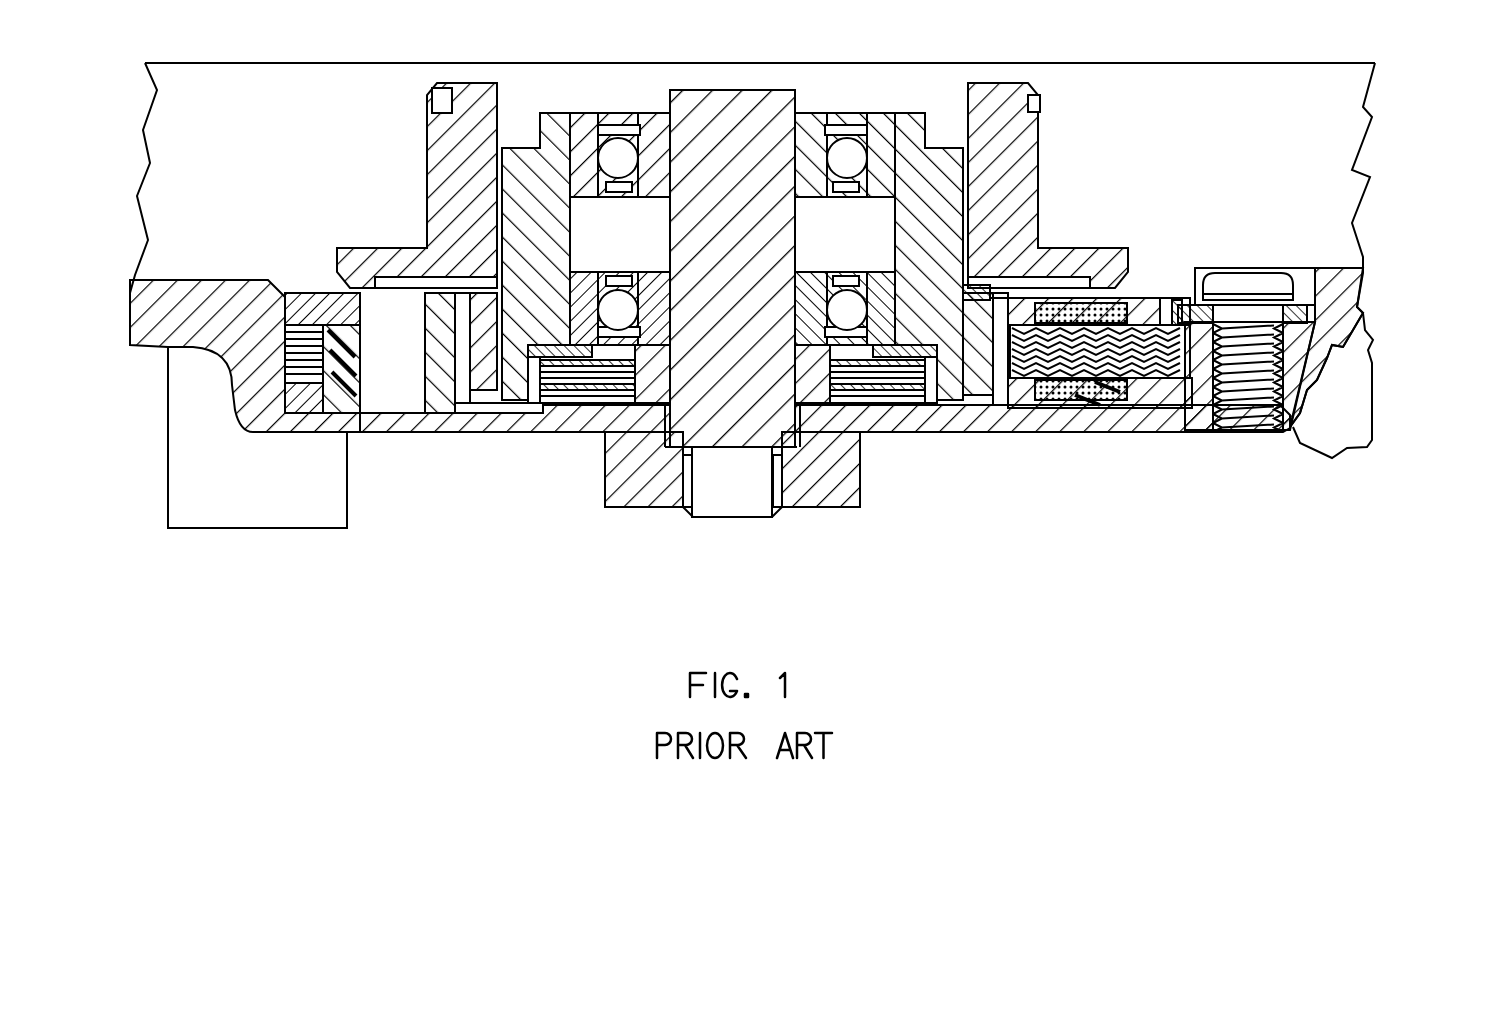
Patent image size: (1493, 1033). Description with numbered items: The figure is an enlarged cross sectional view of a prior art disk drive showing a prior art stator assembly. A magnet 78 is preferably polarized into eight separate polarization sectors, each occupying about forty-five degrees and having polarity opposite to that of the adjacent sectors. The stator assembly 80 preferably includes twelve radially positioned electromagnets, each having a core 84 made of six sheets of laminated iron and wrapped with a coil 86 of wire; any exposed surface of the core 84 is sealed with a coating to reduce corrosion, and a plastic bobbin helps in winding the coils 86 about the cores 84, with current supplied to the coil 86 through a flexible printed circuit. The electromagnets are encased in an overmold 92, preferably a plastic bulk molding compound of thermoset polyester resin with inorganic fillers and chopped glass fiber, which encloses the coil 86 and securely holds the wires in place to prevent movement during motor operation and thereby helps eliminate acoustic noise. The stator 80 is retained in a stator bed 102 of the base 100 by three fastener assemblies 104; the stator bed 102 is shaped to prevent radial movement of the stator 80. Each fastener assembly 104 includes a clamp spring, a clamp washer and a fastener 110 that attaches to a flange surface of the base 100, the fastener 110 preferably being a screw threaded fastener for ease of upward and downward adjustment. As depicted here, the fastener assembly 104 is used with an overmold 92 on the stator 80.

The magnet 78 is at (980, 377).
The stator assembly 80 is at (1137, 432).
The core 84 is at (1183, 352).
The coil 86 is at (1087, 400).
The overmold 92 is at (1155, 300).
The base 100 is at (1363, 313).
The stator bed 102 is at (1165, 397).
The fastener assembly 104 is at (1278, 262).
The fastener 110 is at (1260, 290).